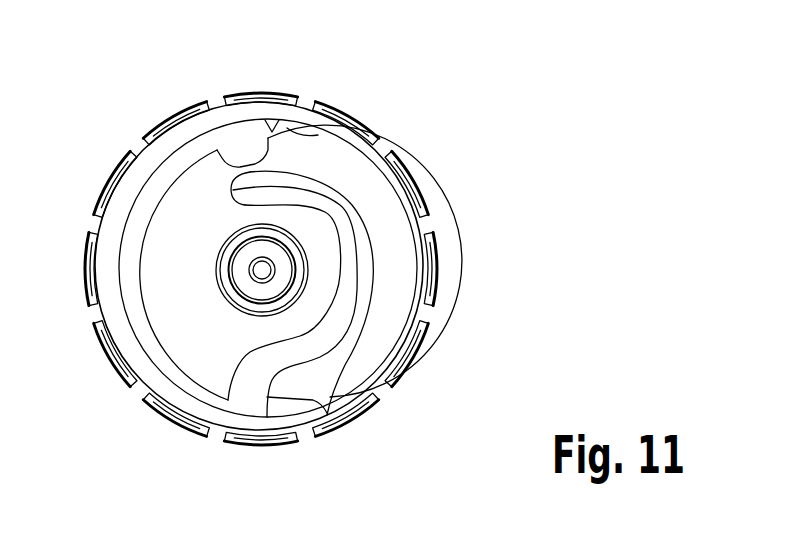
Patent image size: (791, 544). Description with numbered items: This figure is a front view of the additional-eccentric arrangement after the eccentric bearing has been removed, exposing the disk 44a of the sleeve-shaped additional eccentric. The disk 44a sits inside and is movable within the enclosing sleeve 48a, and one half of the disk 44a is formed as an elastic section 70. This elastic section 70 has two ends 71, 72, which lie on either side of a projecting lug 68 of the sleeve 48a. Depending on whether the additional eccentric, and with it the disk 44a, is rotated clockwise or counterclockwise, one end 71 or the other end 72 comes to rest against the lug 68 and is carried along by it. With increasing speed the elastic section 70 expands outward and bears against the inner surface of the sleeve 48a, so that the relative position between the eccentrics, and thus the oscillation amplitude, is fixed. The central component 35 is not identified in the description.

The disk 44a is at (190, 142).
The sleeve 48a is at (240, 113).
The projecting lug 68 is at (268, 133).
The end 71 is at (322, 137).
The elastic section 70 is at (383, 191).
The hub bearing 35 is at (290, 270).
The end 72 is at (267, 397).